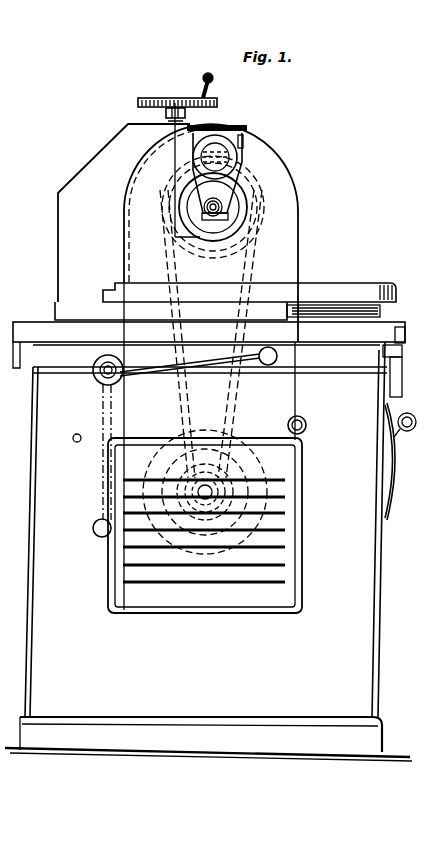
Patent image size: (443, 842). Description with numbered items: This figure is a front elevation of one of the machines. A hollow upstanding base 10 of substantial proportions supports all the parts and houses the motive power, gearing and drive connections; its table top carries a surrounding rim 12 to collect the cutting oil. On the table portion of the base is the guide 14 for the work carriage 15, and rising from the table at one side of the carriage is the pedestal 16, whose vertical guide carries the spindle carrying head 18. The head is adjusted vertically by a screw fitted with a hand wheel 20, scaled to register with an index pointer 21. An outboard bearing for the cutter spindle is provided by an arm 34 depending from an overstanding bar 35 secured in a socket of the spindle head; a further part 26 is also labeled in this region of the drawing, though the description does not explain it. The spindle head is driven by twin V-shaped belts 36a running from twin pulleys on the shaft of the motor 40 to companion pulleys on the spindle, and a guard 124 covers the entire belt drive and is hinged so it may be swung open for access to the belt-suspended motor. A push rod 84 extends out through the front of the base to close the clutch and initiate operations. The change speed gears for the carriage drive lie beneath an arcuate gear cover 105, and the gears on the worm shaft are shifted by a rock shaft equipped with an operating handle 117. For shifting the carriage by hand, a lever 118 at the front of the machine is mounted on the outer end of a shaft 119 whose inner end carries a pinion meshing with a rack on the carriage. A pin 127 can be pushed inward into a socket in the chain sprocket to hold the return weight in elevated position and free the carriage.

The hollow upstanding base 10 is at (358, 590).
The surrounding rim 12 is at (400, 330).
The guide 14 is at (217, 313).
The work carriage 15 is at (322, 287).
The pedestal 16 is at (68, 242).
The spindle carrying head 18 is at (240, 180).
The hand wheel 20 is at (172, 90).
The index pointer 21 is at (165, 114).
The hub 26 is at (221, 210).
The arm 34 is at (220, 188).
The overstanding bar 35 is at (203, 163).
The twin V-shaped belts 36a is at (235, 403).
The motor 40 is at (263, 472).
The push rod 84 is at (308, 425).
The arcuate gear cover 105 is at (395, 467).
The operating handle 117 is at (403, 390).
The lever 118 is at (278, 357).
The shaft 119 is at (102, 380).
The guard 124 is at (298, 247).
The pin 127 is at (77, 444).